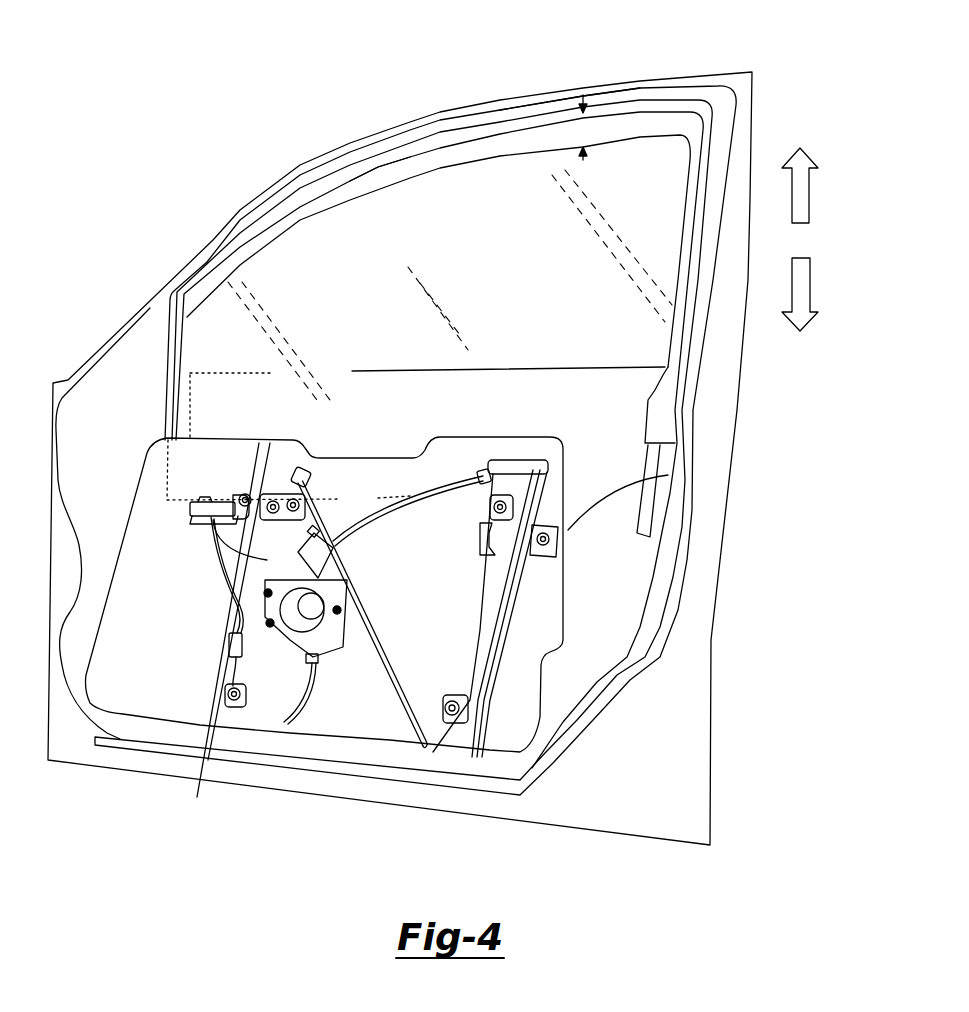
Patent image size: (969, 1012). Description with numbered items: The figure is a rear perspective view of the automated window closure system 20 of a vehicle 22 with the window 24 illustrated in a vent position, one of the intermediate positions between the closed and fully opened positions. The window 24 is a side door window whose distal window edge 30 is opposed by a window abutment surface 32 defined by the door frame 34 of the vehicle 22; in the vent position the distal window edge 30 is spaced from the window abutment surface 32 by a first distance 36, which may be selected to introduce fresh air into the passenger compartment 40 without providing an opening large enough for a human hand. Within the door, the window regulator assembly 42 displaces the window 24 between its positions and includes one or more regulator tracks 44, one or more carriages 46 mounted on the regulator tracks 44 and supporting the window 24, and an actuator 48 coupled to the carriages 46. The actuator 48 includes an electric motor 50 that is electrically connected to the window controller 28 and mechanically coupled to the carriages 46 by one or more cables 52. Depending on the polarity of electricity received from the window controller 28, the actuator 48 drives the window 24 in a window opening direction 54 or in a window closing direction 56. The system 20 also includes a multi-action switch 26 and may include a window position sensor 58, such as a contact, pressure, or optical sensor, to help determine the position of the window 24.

The automated window closure system 20 is at (188, 103).
The vehicle 22 is at (618, 820).
The window 24 is at (281, 258).
The multi-action switch 26 is at (203, 500).
The window controller 28 is at (200, 526).
The distal window edge 30 is at (500, 157).
The window abutment surface 32 is at (378, 167).
The door frame 34 is at (545, 104).
The first distance 36 is at (586, 134).
The passenger compartment 40 is at (70, 828).
The window regulator assembly 42 is at (432, 465).
The regulator track 44 is at (463, 696).
The carriage 46 is at (247, 492).
The actuator 48 is at (333, 645).
The electric motor 50 is at (419, 340).
The cable 52 is at (367, 535).
The window opening direction 54 is at (810, 275).
The window closing direction 56 is at (810, 183).
The window position sensor 58 is at (228, 658).